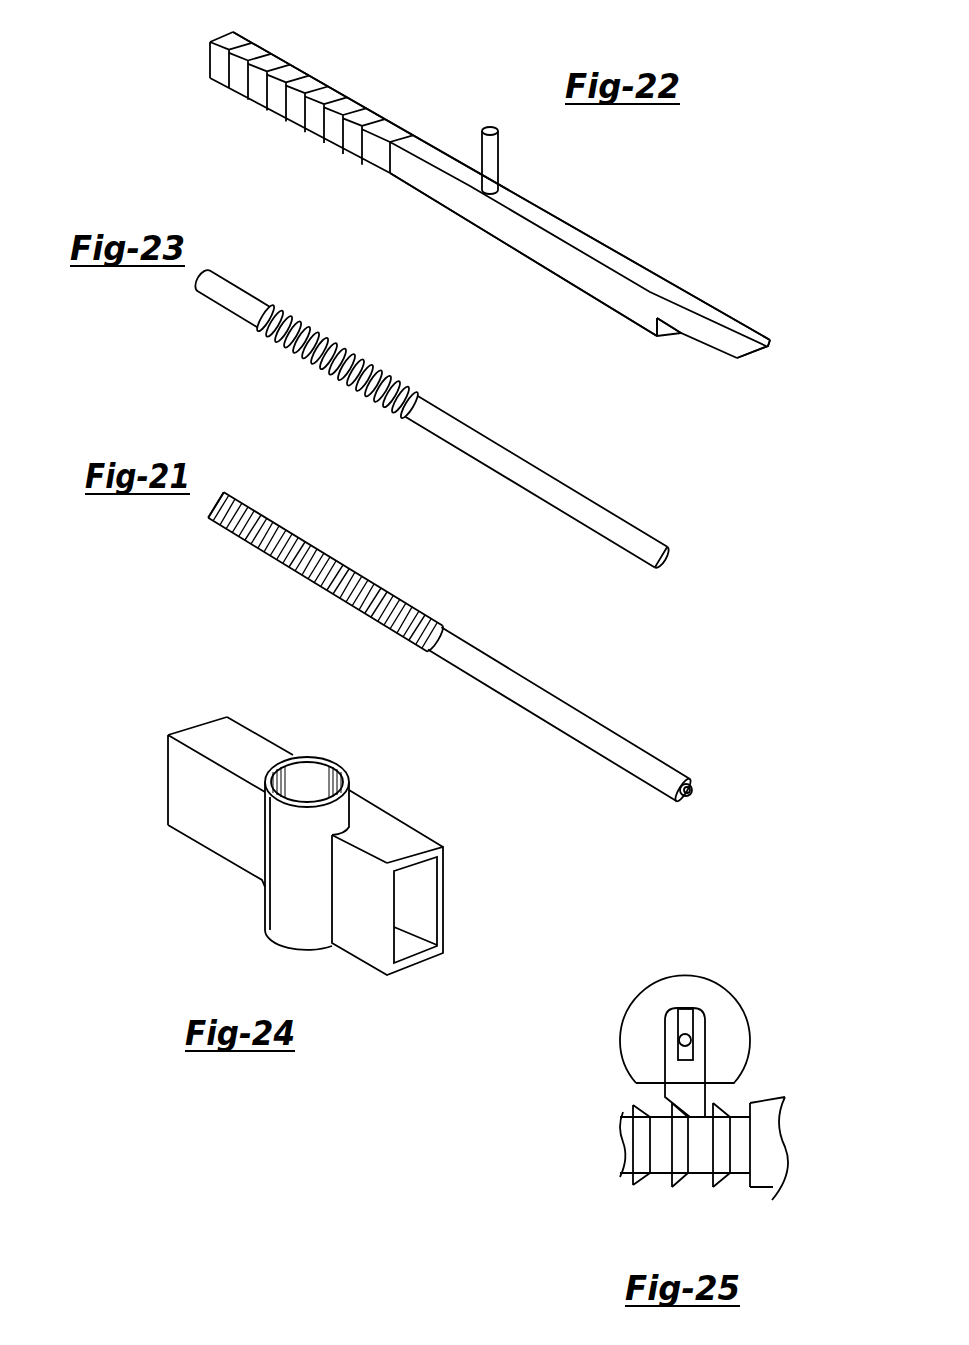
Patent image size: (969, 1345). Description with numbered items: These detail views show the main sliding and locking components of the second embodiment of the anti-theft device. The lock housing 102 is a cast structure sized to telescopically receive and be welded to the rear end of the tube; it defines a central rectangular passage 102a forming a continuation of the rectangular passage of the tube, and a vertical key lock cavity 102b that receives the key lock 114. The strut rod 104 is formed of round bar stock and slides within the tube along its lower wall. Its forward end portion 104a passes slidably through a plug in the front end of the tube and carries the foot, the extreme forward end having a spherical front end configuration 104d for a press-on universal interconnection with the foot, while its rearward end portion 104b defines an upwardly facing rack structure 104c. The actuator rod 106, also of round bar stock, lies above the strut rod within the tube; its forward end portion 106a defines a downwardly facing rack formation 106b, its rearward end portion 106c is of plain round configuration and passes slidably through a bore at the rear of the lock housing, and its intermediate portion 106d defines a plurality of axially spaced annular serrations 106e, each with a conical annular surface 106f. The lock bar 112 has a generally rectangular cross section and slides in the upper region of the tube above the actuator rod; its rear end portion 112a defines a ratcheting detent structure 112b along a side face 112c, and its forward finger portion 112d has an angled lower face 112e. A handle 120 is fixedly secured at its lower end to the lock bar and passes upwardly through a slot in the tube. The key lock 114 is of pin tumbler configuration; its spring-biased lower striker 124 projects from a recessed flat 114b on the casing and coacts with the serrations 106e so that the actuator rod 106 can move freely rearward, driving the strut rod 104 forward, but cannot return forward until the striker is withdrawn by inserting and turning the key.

In FIG. 24, the lock housing 102 is at (311, 817).
In FIG. 24, the central rectangular passage 102a is at (418, 912).
In FIG. 24, the vertical key lock cavity 102b is at (310, 770).
In FIG. 21, the strut rod 104 is at (491, 647).
In FIG. 21, the forward end portion 104a is at (605, 722).
In FIG. 21, the rearward end portion 104b is at (329, 550).
In FIG. 21, the rack structure 104c is at (272, 549).
In FIG. 21, the spherical front end configuration 104d is at (694, 794).
In FIG. 23, the actuator rod 106 is at (460, 413).
In FIG. 25, the actuator rod 106 is at (664, 1149).
In FIG. 23, the forward end portion 106a is at (648, 534).
In FIG. 23, the rack formation 106b is at (577, 523).
In FIG. 23, the rearward end portion 106c is at (235, 311).
In FIG. 25, the rearward end portion 106c is at (763, 1102).
In FIG. 23, the intermediate portion 106d is at (337, 339).
In FIG. 23, the annular serrations 106e is at (300, 322).
In FIG. 25, the annular serrations 106e is at (725, 1170).
In FIG. 25, the conical annular surface 106f is at (645, 1173).
In FIG. 22, the lock bar 112 is at (506, 194).
In FIG. 22, the rear end portion 112a is at (333, 88).
In FIG. 22, the ratcheting detent structure 112b is at (333, 135).
In FIG. 22, the side face 112c is at (478, 212).
In FIG. 22, the forward finger portion 112d is at (730, 313).
In FIG. 22, the angled lower face 112e is at (704, 350).
In FIG. 22, the handle 120 is at (485, 152).
In FIG. 25, the key lock 114 is at (672, 1031).
In FIG. 25, the recessed flat 114b is at (711, 1083).
In FIG. 25, the lower striker 124 is at (680, 1050).